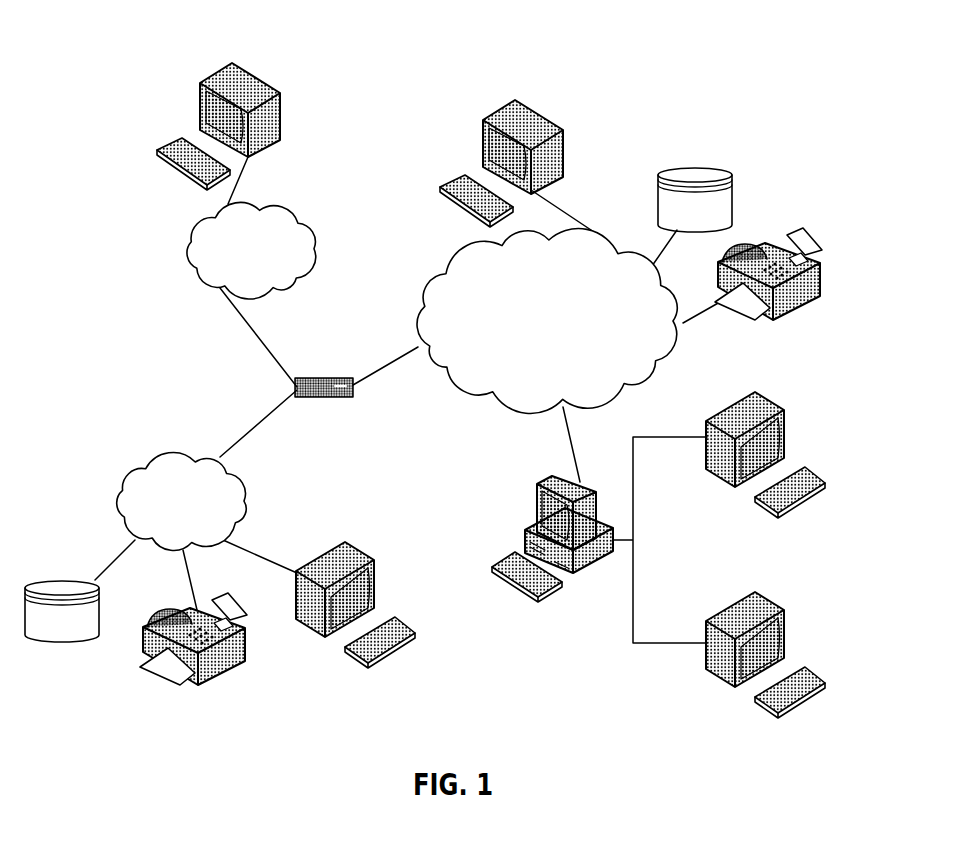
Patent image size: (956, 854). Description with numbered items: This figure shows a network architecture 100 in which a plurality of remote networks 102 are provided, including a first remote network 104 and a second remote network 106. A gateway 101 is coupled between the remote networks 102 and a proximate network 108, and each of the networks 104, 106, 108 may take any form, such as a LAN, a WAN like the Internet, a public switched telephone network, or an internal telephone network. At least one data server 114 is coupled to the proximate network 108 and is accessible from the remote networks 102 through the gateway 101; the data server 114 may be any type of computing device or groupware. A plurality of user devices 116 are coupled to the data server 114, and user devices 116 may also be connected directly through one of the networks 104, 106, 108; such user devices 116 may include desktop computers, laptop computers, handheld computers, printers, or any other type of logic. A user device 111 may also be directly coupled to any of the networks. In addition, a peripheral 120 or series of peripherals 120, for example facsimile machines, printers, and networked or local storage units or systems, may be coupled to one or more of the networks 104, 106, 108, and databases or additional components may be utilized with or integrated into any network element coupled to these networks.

The architecture 100 is at (136, 47).
The gateway 101 is at (303, 378).
The remote networks 102 is at (154, 314).
The first remote network 104 is at (117, 479).
The second remote network 106 is at (316, 223).
The proximate network 108 is at (647, 382).
The user device 111 is at (563, 133).
The data server 114 is at (537, 497).
The user devices 116 is at (280, 101).
The peripheral 120 is at (60, 637).